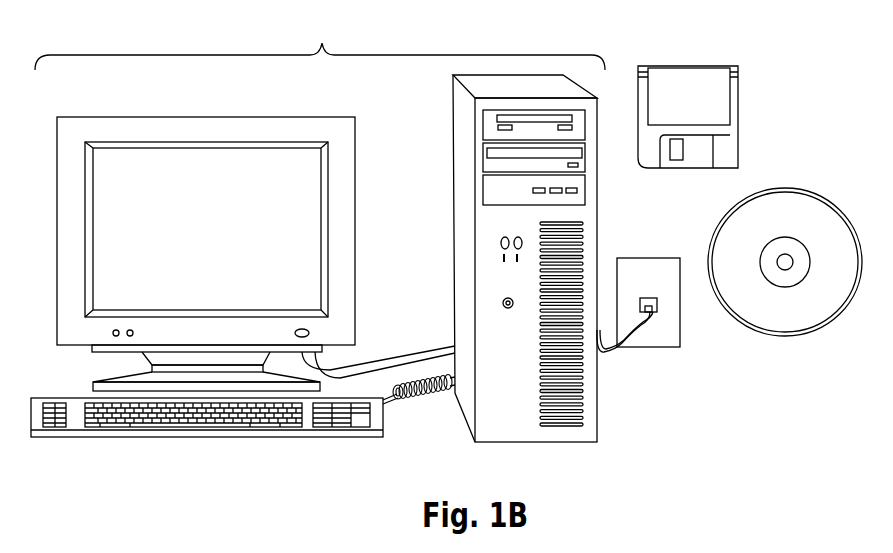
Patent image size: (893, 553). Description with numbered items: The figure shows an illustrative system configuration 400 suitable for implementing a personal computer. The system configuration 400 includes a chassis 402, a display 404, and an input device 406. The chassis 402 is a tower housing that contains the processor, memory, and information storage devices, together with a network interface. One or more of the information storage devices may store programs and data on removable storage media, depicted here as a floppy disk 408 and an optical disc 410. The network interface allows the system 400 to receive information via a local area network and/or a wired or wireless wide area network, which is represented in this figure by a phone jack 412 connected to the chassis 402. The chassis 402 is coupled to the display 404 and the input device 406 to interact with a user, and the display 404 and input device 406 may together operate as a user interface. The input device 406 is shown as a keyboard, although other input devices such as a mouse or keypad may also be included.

The system configuration 400 is at (320, 43).
The chassis 402 is at (453, 297).
The display 404 is at (80, 345).
The input device 406 is at (70, 442).
The floppy disk 408 is at (738, 147).
The optical disc 410 is at (813, 178).
The phone jack 412 is at (640, 258).